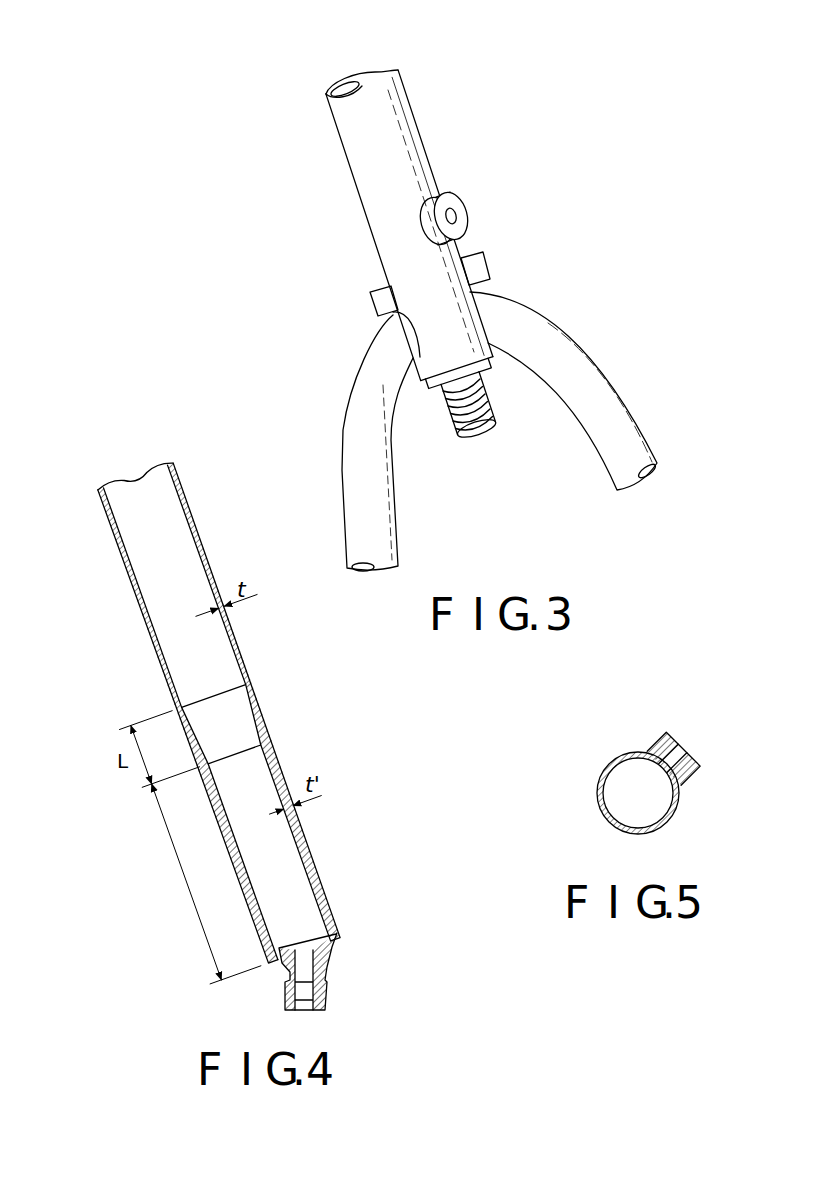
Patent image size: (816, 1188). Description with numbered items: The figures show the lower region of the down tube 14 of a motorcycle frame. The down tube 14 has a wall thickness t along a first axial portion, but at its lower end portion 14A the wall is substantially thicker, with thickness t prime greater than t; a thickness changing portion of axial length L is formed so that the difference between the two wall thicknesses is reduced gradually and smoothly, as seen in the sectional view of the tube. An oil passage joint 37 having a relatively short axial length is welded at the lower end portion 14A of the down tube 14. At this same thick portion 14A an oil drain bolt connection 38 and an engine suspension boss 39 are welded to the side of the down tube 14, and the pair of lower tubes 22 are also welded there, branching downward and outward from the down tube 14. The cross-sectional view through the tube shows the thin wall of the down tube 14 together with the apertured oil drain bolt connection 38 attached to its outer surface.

In FIG. 3, the down tube 14 is at (345, 127).
In FIG. 4, the down tube 14 is at (119, 548).
In FIG. 5, the down tube 14 is at (609, 766).
In FIG. 4, the lower end portion 14A is at (190, 847).
In FIG. 3, the lower tubes 22 is at (347, 500).
In FIG. 3, the oil passage joint 37 is at (494, 411).
In FIG. 4, the oil passage joint 37 is at (333, 952).
In FIG. 3, the oil drain bolt connection 38 is at (433, 185).
In FIG. 5, the oil drain bolt connection 38 is at (655, 747).
In FIG. 3, the engine suspension boss 39 is at (491, 270).